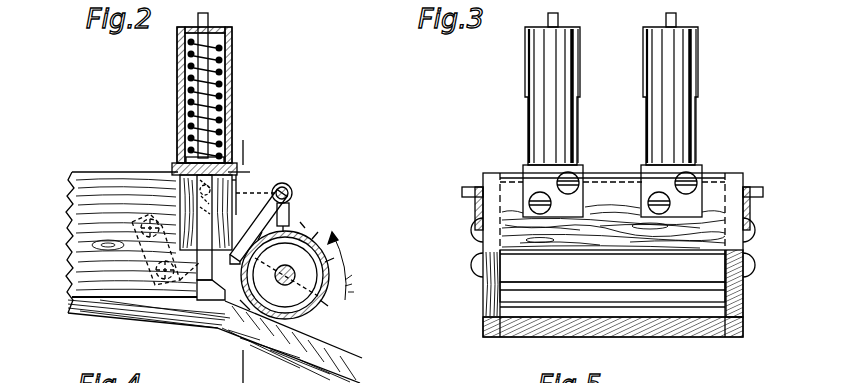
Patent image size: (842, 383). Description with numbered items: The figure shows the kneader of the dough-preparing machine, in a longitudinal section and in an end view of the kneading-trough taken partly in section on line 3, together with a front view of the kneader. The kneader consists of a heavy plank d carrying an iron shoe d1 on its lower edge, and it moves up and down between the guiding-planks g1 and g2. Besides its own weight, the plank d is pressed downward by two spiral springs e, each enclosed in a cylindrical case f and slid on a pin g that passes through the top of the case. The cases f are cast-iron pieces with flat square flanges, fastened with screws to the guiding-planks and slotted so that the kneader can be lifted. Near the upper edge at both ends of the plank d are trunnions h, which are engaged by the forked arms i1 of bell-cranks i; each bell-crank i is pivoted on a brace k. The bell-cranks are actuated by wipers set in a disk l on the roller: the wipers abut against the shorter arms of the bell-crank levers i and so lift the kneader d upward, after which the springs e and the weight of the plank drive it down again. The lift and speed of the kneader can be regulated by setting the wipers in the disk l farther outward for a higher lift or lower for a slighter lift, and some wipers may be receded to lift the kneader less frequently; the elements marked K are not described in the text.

In FIG. 2, the pin g is at (206, 17).
In FIG. 3, the pin g is at (558, 15).
In FIG. 2, the spiral spring e is at (226, 70).
In FIG. 2, the cylindrical case f is at (233, 98).
In FIG. 3, the cylindrical case f is at (570, 64).
In FIG. 2, the guiding-plank g1 is at (178, 172).
In FIG. 2, the guiding-plank g2 is at (243, 173).
In FIG. 3, the guiding-plank g2 is at (612, 194).
In FIG. 2, the brace k is at (293, 190).
In FIG. 2, the bell-crank i is at (289, 214).
In FIG. 2, the forked arm i1 is at (205, 206).
In FIG. 2, the disk l is at (305, 237).
In FIG. 2, the plank d is at (205, 227).
In FIG. 3, the plank d is at (612, 266).
In FIG. 2, the iron shoe d1 is at (211, 290).
In FIG. 3, the iron shoe d1 is at (612, 294).
In FIG. 3, the trunnion h is at (462, 192).
In FIG. 3, the knob K is at (483, 247).
In FIG. 2, the section line 3 is at (250, 252).